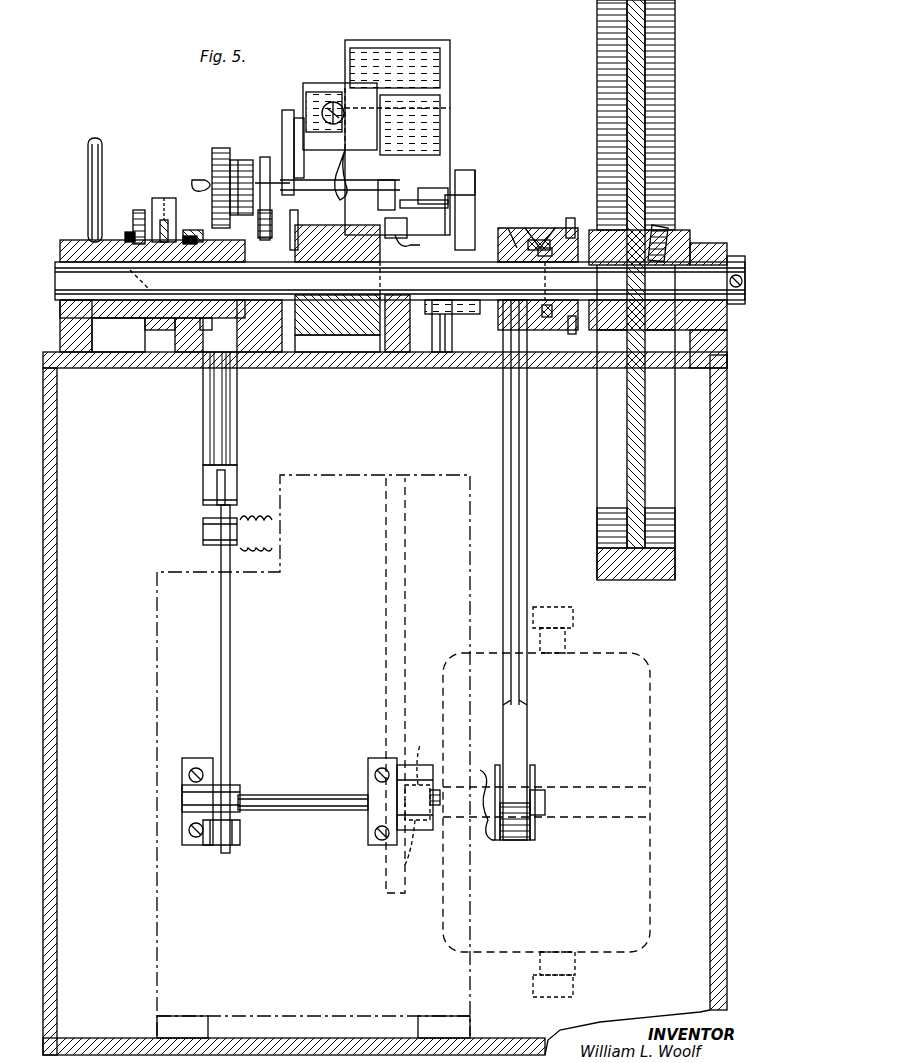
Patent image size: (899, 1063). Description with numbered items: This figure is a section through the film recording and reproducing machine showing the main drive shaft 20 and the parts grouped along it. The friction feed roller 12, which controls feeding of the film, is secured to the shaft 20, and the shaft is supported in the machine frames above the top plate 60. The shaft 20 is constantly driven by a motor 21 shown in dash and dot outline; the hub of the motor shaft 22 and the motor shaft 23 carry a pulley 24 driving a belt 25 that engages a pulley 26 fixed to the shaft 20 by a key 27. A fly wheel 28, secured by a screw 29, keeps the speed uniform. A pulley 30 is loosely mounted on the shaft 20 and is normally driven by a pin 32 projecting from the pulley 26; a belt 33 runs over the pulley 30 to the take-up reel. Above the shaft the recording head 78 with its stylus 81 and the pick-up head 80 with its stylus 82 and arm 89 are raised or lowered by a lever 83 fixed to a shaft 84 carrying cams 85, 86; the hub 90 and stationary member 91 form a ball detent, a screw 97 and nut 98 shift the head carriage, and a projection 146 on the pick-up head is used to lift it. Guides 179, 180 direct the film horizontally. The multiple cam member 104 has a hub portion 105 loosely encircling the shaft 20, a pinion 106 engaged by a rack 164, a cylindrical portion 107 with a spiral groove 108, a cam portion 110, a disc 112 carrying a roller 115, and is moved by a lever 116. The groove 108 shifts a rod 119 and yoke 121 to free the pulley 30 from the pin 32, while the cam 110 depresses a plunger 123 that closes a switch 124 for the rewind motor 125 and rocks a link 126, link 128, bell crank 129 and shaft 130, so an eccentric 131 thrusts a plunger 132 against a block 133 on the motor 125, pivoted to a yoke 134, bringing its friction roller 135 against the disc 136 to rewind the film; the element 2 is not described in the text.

The lever 2 is at (380, 218).
The friction feed roller 12 is at (335, 340).
The shaft 20 is at (60, 300).
The motor 21 is at (157, 708).
The hub of motor shaft 22 is at (485, 840).
The motor shaft 23 is at (540, 790).
The pulley 24 is at (535, 833).
The belt 25 is at (528, 515).
The pulley 26 is at (520, 228).
The key 27 is at (510, 235).
The fly wheel 28 is at (640, 163).
The screw 29 is at (668, 235).
The pulley 30 is at (575, 238).
The pin 32 is at (540, 240).
The belt 33 is at (552, 235).
The top plate 60 is at (78, 378).
The recording head 78 is at (450, 76).
The pick-up head 80 is at (330, 90).
The stylus 81 is at (340, 200).
The stylus 82 is at (340, 180).
The lever 83 is at (188, 236).
The shaft 84 is at (423, 185).
The cam 85 is at (390, 180).
The cam 86 is at (298, 165).
The arm 89 is at (288, 165).
The hub of lever 90 is at (215, 155).
The stationary member 91 is at (242, 160).
The screw 97 is at (130, 232).
The nut 98 is at (140, 210).
The multiple cam member 104 is at (200, 183).
The hub portion 105 is at (98, 370).
The pinion 106 is at (125, 300).
The cylindrical portion 107 is at (160, 300).
The spiral groove 108 is at (200, 340).
The cam portion 110 is at (212, 324).
The disc 112 is at (352, 322).
The roller 115 is at (335, 236).
The lever 116 is at (88, 165).
The rod 119 is at (472, 318).
The yoke 121 is at (572, 334).
The plunger 123 is at (237, 437).
The switch 124 is at (203, 535).
The rewind motor 125 is at (650, 703).
The link 126 is at (203, 478).
The link 128 is at (230, 677).
The bell crank 129 is at (218, 845).
The shaft 130 is at (305, 810).
The eccentric 131 is at (435, 790).
The plunger 132 is at (433, 790).
The block 133 is at (421, 768).
The yoke 134 is at (573, 620).
The friction roller 135 is at (419, 854).
The disc 136 is at (386, 612).
The projection 146 is at (265, 180).
The rack 164 is at (164, 195).
The guide 179 is at (448, 204).
The guide 180 is at (448, 196).